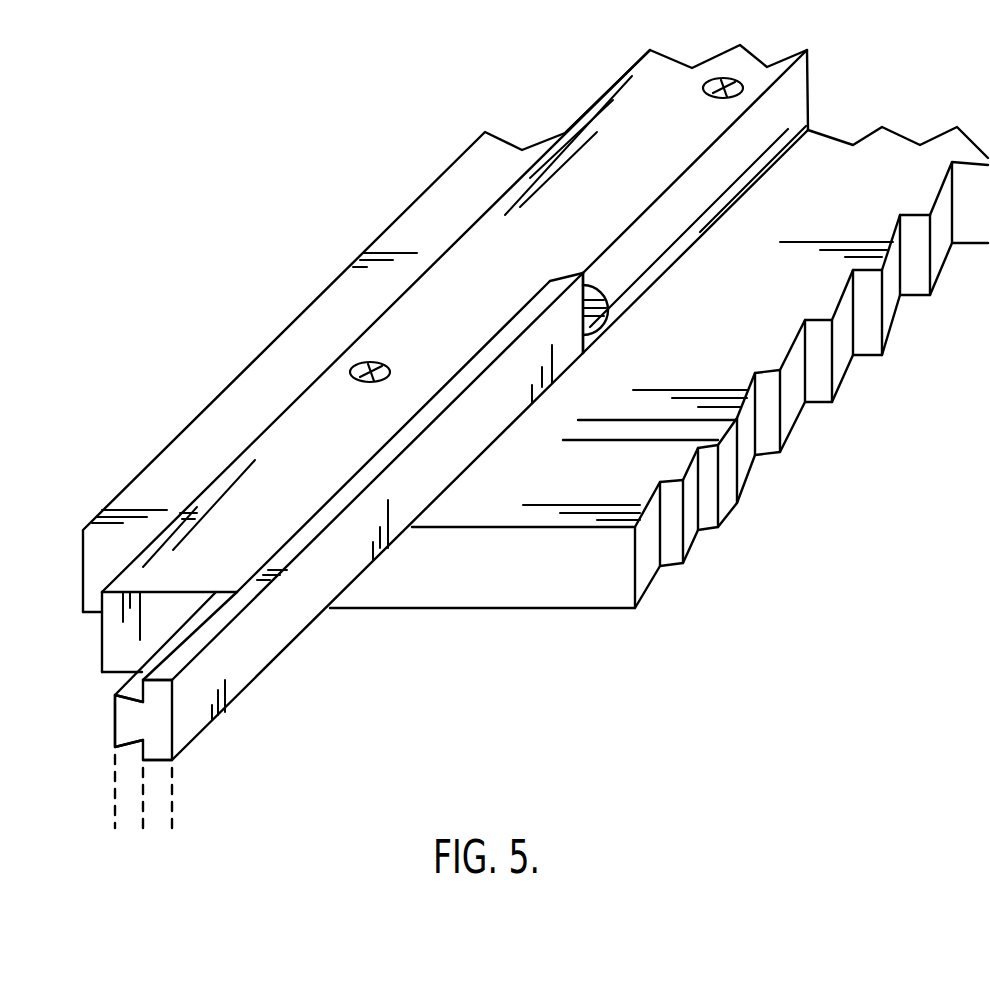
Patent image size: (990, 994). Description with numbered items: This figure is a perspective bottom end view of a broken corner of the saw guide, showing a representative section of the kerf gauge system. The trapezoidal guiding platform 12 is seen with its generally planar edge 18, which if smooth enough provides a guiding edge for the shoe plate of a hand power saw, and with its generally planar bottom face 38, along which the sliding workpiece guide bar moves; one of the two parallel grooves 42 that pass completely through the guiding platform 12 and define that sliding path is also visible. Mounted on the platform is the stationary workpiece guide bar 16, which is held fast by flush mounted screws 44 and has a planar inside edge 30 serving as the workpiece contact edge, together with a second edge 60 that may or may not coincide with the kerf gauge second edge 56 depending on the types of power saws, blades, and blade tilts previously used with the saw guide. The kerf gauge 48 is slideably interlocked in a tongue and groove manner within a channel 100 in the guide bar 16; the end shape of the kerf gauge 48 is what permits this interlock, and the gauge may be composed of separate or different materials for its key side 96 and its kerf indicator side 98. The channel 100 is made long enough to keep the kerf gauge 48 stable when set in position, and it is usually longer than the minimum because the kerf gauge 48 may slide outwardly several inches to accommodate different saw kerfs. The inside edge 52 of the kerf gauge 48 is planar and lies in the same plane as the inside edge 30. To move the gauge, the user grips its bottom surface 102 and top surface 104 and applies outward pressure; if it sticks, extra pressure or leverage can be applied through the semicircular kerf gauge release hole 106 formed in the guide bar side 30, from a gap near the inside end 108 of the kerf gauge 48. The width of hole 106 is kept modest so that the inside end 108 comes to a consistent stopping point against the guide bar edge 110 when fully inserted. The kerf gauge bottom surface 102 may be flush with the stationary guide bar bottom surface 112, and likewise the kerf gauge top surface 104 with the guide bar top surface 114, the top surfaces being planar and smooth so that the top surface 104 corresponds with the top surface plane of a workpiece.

The guiding platform 12 is at (790, 377).
The stationary workpiece guide bar 16 is at (580, 97).
The planar edge 18 is at (513, 590).
The inside edge of stationary guide bar 30 is at (682, 245).
The bottom face of guiding platform 38 is at (843, 200).
The groove 42 is at (578, 408).
The screw 44 is at (372, 363).
The kerf gauge 48 is at (253, 707).
The inside edge of kerf gauge 52 is at (280, 630).
The tongue 56 is at (172, 718).
The stationary guide bar second edge 60 is at (108, 627).
The key side 96 is at (143, 828).
The kerf indicator side 98 is at (172, 828).
The channel 100 is at (550, 275).
The kerf gauge bottom surface 102 is at (200, 643).
The kerf gauge top surface 104 is at (158, 762).
The kerf gauge release hole 106 is at (600, 293).
The inside end of kerf gauge 108 is at (573, 283).
The guide bar edge 110 is at (584, 273).
The stationary guide bar bottom surface 112 is at (660, 152).
The guide bar top surface 114 is at (112, 673).